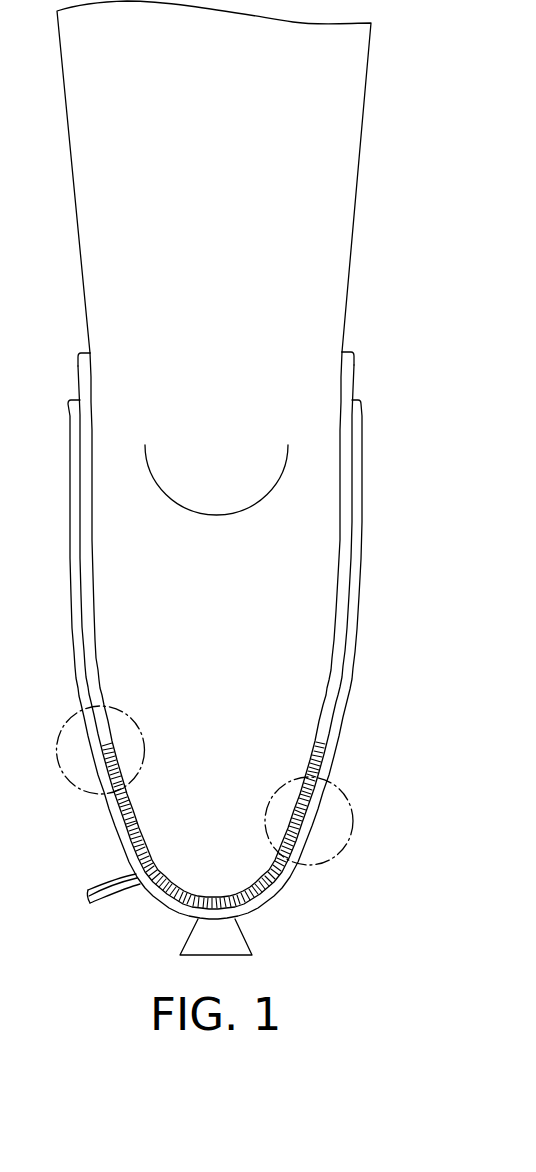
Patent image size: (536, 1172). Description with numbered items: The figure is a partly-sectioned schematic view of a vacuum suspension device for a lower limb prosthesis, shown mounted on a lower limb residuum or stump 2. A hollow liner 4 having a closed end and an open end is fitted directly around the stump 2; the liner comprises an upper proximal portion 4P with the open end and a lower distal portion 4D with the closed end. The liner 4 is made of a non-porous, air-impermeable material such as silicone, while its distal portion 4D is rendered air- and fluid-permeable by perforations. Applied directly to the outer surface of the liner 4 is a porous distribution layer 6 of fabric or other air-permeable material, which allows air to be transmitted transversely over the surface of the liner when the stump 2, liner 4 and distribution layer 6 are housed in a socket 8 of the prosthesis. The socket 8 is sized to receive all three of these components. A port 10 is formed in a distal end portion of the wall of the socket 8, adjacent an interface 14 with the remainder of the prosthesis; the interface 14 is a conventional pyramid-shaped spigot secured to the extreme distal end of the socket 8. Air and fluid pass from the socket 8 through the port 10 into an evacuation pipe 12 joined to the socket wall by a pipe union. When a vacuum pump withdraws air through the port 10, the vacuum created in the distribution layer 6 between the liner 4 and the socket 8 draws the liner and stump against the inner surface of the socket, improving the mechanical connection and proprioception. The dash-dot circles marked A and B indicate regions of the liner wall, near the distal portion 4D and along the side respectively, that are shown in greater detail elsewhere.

The lower limb residuum or stump 2 is at (352, 245).
The hollow liner 4 is at (345, 538).
The proximal portion of the liner 4P is at (345, 367).
The distal portion of the liner 4D is at (288, 884).
The porous distribution layer 6 is at (112, 797).
The socket 8 is at (360, 640).
The port 10 is at (133, 887).
The evacuation pipe 12 is at (104, 882).
The interface 14 is at (240, 937).
The detail region A is at (266, 803).
The detail region B is at (150, 720).